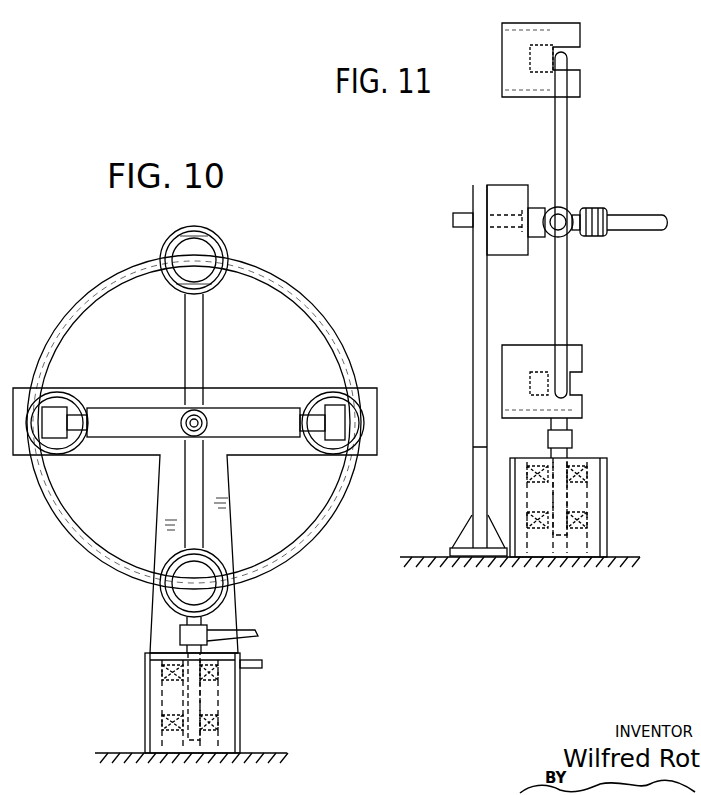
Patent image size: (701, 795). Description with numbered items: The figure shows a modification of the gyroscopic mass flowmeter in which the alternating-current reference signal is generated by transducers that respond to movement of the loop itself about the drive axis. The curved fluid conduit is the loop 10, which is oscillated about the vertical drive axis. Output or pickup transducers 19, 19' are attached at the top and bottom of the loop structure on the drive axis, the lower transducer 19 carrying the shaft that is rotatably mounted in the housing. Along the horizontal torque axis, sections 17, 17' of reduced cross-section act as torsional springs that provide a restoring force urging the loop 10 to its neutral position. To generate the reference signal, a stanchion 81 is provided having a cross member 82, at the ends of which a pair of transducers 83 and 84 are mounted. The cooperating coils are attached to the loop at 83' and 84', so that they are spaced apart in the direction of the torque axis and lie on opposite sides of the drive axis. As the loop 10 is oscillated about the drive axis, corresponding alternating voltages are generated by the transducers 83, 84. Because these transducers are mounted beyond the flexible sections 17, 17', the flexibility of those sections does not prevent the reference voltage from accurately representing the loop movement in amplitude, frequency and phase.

In FIG. 10, the loop 10 is at (295, 292).
In FIG. 11, the loop 10 is at (560, 139).
In FIG. 10, the section of reduced cross-section 17 is at (89, 448).
In FIG. 10, the section of reduced cross-section 17' is at (304, 448).
In FIG. 10, the output transducer 19 is at (183, 601).
In FIG. 11, the output transducer 19 is at (568, 398).
In FIG. 10, the output transducer 19' is at (168, 259).
In FIG. 11, the output transducer 19' is at (565, 58).
In FIG. 10, the stanchion 81 is at (213, 523).
In FIG. 11, the stanchion 81 is at (480, 363).
In FIG. 10, the cross member 82 is at (234, 402).
In FIG. 11, the cross member 82 is at (476, 193).
In FIG. 10, the transducer 83 is at (66, 404).
In FIG. 11, the transducer 83 is at (507, 201).
In FIG. 10, the cooperating coil attachment 83' is at (62, 444).
In FIG. 11, the cooperating coil attachment 83' is at (542, 197).
In FIG. 10, the transducer 84 is at (333, 401).
In FIG. 10, the cooperating coil attachment 84' is at (308, 404).